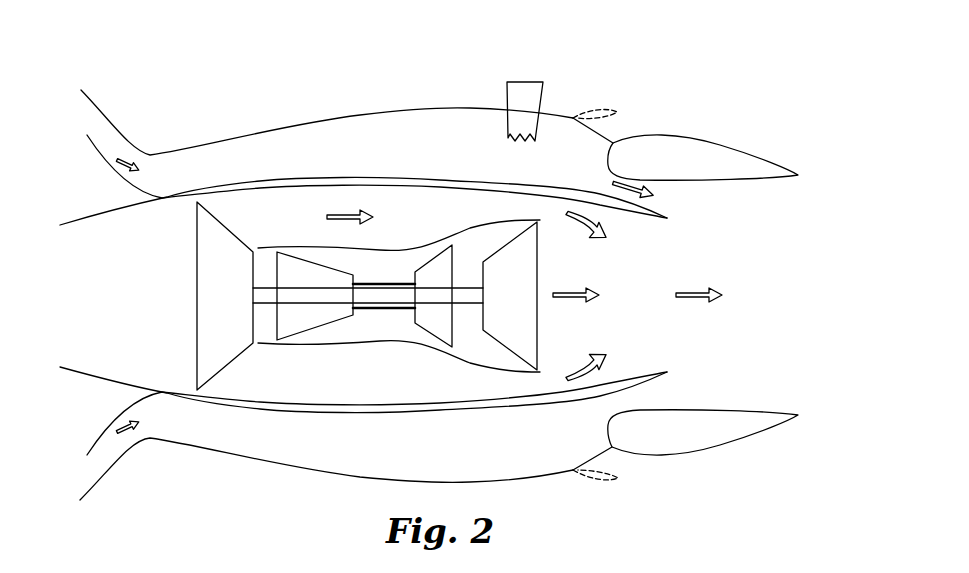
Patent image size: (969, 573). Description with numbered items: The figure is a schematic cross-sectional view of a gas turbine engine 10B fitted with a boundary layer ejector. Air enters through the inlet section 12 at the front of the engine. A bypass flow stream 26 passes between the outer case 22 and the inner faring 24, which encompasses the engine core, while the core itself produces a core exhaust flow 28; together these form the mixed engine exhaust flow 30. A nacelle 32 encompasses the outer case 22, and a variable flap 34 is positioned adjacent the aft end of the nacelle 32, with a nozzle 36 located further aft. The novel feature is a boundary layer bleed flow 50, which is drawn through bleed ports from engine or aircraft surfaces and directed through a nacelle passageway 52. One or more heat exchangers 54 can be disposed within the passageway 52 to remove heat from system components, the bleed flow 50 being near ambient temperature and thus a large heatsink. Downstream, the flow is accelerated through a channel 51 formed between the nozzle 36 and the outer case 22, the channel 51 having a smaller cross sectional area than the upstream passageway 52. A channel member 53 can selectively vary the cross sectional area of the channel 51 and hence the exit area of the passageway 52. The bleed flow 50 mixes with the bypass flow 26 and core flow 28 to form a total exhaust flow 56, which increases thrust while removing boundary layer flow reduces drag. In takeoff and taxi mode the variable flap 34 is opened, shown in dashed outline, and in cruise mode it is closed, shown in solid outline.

The gas turbine engine 10B is at (455, 80).
The inlet section 12 is at (118, 331).
The outer case 22 is at (335, 177).
The inner faring 24 is at (467, 233).
The bypass flow stream 26 is at (327, 216).
The core exhaust flow 28 is at (560, 292).
The mixed engine exhaust flow 30 is at (580, 225).
The nacelle 32 is at (258, 128).
The variable flap 34 is at (585, 112).
The nozzle 36 is at (686, 150).
The boundary layer bleed flow 50 is at (121, 160).
The channel 51 is at (637, 395).
The nacelle passageway 52 is at (237, 170).
The channel member 53 is at (662, 410).
The heat exchanger 54 is at (524, 95).
The total exhaust flow 56 is at (688, 292).